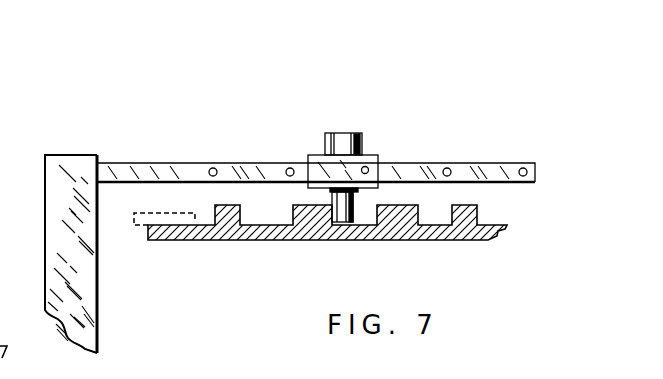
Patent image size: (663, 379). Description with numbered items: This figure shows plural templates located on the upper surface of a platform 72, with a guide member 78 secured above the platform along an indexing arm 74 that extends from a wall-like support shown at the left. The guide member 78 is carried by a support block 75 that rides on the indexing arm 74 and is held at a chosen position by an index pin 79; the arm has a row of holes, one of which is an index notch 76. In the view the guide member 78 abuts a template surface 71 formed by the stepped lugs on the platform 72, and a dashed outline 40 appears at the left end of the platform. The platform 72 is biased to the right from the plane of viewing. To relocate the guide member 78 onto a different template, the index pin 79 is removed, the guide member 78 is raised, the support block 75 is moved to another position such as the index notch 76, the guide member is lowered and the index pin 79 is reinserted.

The support base (phantom) 40 is at (136, 224).
The template surface 71 is at (332, 208).
The platform 72 is at (327, 247).
The indexing arm 74 is at (401, 163).
The support block 75 is at (317, 155).
The index notch 76 is at (519, 163).
The guide member 78 is at (356, 212).
The index pin 79 is at (373, 155).